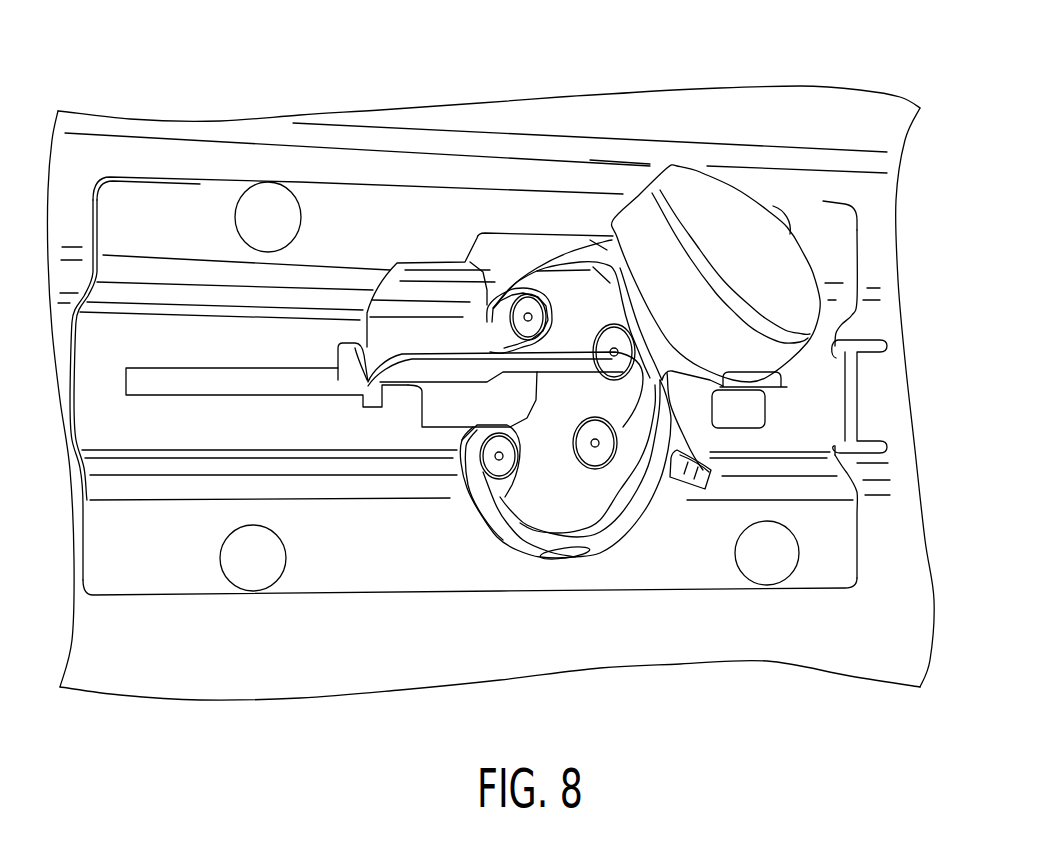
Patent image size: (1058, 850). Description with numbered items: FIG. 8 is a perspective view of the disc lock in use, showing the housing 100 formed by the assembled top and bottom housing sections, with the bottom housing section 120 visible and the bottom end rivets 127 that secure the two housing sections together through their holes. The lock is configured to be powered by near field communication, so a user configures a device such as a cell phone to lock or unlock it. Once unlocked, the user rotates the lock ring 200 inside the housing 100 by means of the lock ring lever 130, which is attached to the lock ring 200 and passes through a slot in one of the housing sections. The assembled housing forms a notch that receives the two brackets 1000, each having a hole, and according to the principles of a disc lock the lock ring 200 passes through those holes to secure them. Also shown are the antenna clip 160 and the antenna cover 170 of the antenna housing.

The housing 100 is at (690, 420).
The bottom housing section 120 is at (505, 498).
The bottom end rivets 127 is at (612, 350).
The lock ring lever 130 is at (708, 483).
The antenna clip 160 is at (632, 200).
The antenna cover 170 is at (742, 234).
The lock ring 200 is at (485, 337).
The two brackets 1000 is at (480, 406).